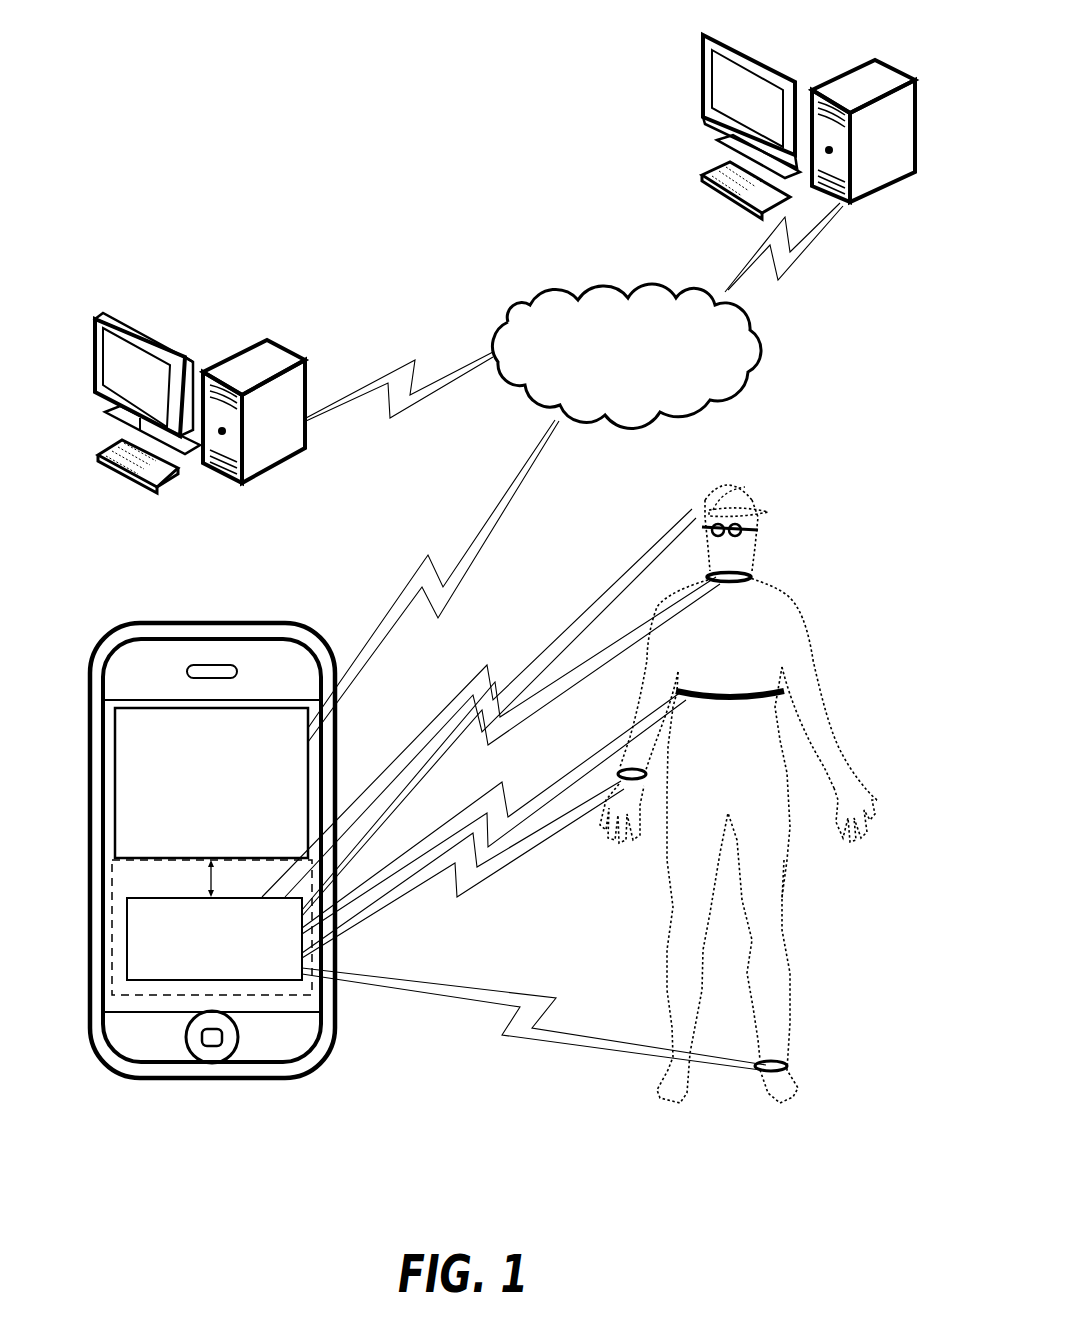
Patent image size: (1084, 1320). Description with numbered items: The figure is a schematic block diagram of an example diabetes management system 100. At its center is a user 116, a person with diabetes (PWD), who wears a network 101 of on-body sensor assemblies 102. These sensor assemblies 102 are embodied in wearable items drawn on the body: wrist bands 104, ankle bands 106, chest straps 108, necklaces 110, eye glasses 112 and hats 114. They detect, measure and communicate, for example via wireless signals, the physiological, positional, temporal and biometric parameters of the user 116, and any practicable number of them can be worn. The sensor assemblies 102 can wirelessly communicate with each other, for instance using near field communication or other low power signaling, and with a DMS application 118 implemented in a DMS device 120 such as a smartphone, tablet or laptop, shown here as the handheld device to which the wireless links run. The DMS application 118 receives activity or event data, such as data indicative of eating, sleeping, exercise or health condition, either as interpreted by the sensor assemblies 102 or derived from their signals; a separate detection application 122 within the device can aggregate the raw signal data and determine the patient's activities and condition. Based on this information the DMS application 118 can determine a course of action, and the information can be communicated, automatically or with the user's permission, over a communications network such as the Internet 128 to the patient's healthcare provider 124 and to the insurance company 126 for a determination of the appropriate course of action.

The system 100 is at (296, 112).
The network 101 is at (680, 509).
The on-body sensor assemblies 102 is at (883, 461).
The wrist bands 104 is at (642, 790).
The ankle bands 106 is at (786, 1067).
The chest straps 108 is at (742, 692).
The necklaces 110 is at (742, 580).
The eye glasses 112 is at (740, 533).
The hats 114 is at (752, 495).
The user 116 is at (787, 884).
The DMS application 118 is at (113, 774).
The DMS device 120 is at (229, 622).
The detection application 122 is at (127, 936).
The healthcare provider 124 is at (268, 341).
The insurance company 126 is at (865, 203).
The Internet 128 is at (760, 374).